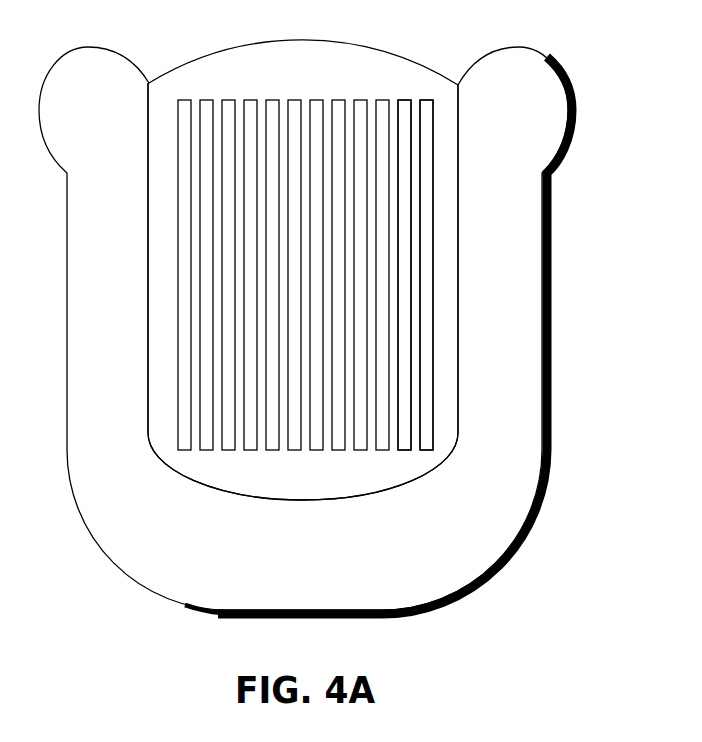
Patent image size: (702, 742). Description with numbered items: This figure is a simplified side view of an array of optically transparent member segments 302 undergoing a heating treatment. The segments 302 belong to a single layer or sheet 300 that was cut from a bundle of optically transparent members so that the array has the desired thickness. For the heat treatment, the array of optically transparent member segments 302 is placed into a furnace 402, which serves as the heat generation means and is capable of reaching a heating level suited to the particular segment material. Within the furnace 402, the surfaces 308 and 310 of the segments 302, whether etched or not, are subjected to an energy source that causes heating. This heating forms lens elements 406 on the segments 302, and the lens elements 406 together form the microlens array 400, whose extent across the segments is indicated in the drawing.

The sheet 300 is at (165, 101).
The optically transparent member segments 302 is at (436, 253).
The surface 308 is at (445, 315).
The surface 310 is at (426, 100).
The microlens array 400 is at (308, 281).
The furnace 402 is at (553, 330).
The lens elements 406 is at (294, 100).